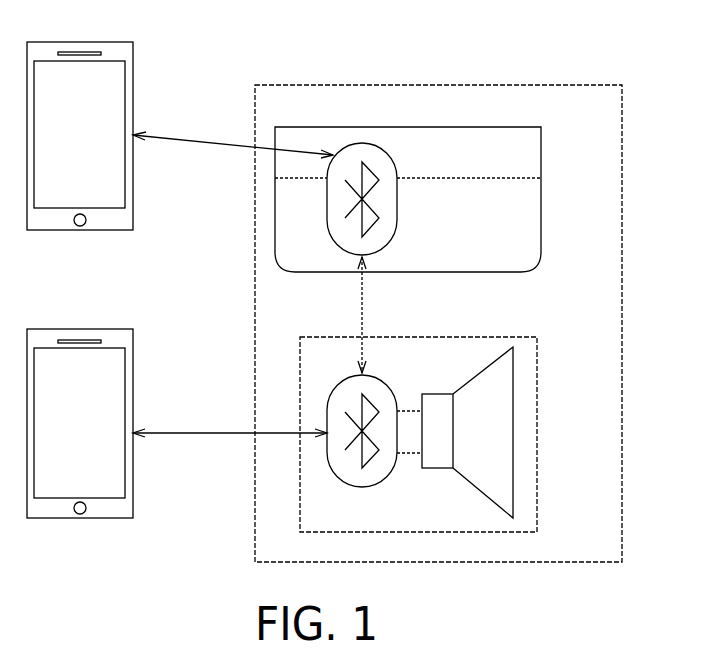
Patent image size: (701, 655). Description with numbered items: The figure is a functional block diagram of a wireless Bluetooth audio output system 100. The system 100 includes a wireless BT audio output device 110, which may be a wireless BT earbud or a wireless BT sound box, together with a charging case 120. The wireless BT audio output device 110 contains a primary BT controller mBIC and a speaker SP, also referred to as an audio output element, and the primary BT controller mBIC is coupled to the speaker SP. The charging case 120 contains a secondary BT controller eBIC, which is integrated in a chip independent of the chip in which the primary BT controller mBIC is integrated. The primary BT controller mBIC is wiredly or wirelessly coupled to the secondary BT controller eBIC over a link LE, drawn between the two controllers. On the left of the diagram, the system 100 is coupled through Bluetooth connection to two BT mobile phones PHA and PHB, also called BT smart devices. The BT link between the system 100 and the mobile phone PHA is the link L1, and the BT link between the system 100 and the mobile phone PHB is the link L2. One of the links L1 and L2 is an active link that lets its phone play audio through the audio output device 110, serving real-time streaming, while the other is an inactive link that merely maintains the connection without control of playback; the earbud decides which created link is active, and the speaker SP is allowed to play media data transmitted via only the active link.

The wireless BT audio output system 100 is at (597, 85).
The wireless BT audio output device 110 is at (513, 337).
The charging case 120 is at (500, 127).
The BT mobile phone PHA is at (100, 329).
The BT mobile phone PHB is at (100, 42).
The link L1 is at (230, 418).
The link L2 is at (233, 136).
The link LE is at (379, 315).
The primary BT controller mBIC is at (383, 377).
The secondary BT controller eBIC is at (397, 197).
The speaker SP is at (485, 492).